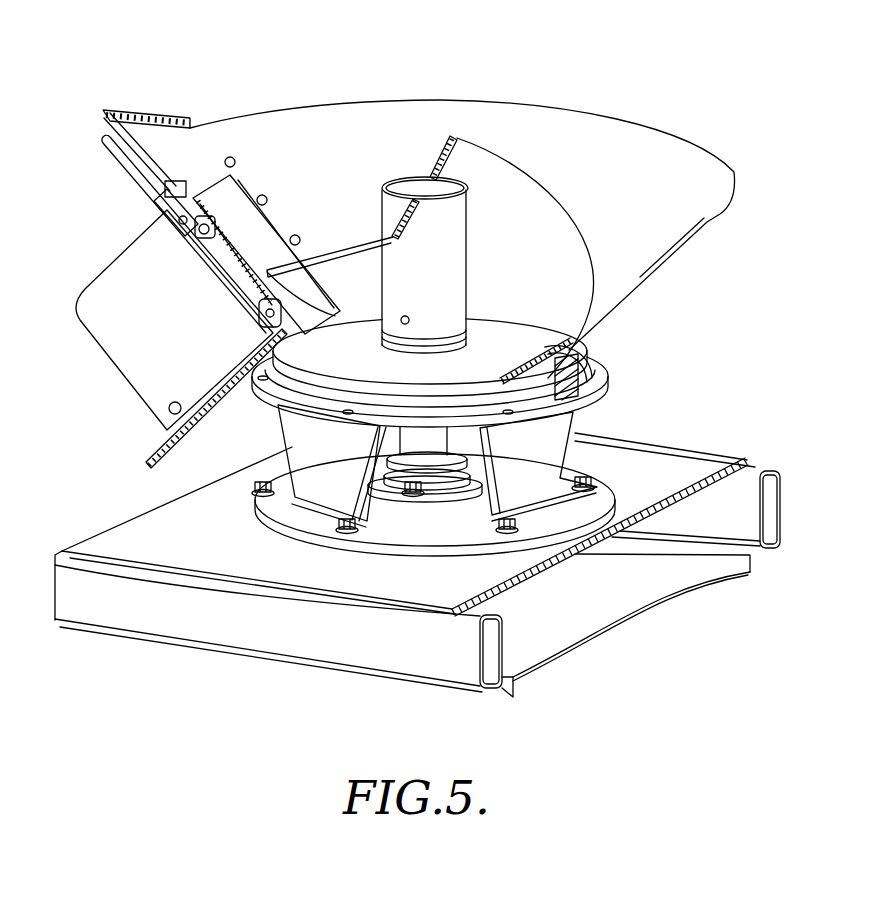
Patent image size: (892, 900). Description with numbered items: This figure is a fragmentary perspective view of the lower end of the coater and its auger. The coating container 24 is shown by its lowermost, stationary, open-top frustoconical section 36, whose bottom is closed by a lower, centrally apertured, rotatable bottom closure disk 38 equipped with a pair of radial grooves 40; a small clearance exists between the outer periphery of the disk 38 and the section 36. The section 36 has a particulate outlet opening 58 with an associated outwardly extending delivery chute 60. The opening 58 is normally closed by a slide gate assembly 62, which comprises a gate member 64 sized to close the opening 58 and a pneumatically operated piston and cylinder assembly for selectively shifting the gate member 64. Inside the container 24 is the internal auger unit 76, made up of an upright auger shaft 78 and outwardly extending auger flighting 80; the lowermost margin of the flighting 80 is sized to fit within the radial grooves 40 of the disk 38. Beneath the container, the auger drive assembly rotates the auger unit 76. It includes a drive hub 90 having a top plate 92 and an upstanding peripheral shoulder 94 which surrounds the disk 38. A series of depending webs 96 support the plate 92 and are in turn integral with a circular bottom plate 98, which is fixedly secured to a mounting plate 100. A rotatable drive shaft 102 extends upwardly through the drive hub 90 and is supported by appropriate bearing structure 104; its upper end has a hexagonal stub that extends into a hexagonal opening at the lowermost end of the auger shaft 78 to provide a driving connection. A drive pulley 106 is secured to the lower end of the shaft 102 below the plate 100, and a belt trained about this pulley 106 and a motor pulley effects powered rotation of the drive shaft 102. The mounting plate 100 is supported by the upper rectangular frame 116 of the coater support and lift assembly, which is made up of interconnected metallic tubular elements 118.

The coating container 24 is at (280, 93).
The frustoconical section 36 is at (665, 175).
The bottom closure disk 38 is at (407, 363).
The radial grooves 40 is at (357, 320).
The particulate outlet opening 58 is at (233, 181).
The delivery chute 60 is at (130, 372).
The slide gate assembly 62 is at (122, 213).
The gate member 64 is at (233, 258).
The auger unit 76 is at (503, 147).
The auger shaft 78 is at (406, 185).
The auger flighting 80 is at (562, 232).
The drive hub 90 is at (592, 416).
The top plate 92 is at (592, 394).
The peripheral shoulder 94 is at (592, 357).
The depending webs 96 is at (290, 434).
The circular bottom plate 98 is at (417, 527).
The mounting plate 100 is at (160, 530).
The drive shaft 102 is at (410, 445).
The bearing structure 104 is at (388, 483).
The drive pulley 106 is at (548, 575).
The upper rectangular frame 116 is at (281, 679).
The tubular elements 118 is at (103, 610).